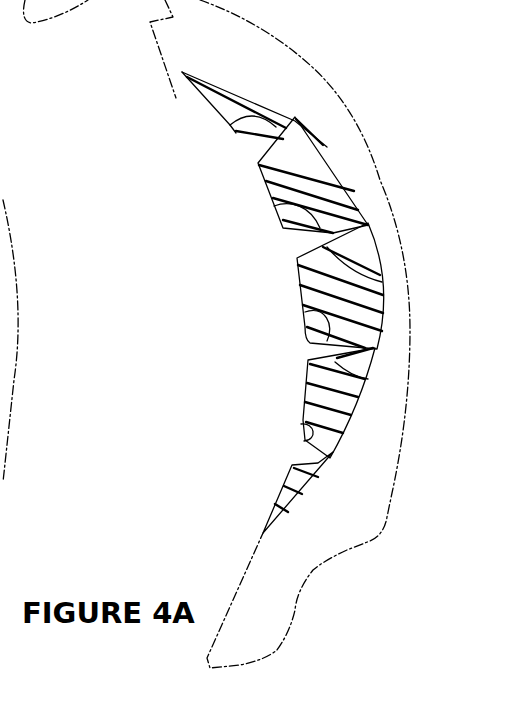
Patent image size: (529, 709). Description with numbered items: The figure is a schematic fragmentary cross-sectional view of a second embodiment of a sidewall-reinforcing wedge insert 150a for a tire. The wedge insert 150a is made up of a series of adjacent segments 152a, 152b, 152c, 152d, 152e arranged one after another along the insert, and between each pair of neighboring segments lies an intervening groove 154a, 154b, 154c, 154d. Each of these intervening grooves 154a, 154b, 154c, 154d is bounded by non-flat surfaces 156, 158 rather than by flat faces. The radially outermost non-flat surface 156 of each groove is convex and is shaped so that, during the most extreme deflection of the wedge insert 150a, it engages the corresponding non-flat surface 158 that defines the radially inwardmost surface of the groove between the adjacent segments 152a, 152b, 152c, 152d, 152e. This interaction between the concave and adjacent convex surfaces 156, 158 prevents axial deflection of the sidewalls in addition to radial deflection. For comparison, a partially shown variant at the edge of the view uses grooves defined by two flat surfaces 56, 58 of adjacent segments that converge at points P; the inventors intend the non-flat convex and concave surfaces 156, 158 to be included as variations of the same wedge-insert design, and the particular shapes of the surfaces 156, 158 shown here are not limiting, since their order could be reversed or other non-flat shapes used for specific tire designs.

The wedge insert 150a is at (218, 322).
The segment 152a is at (232, 110).
The segment 152b is at (293, 187).
The segment 152c is at (320, 275).
The segment 152d is at (313, 403).
The segment 152e is at (296, 483).
The intervening groove 154a is at (260, 143).
The intervening groove 154b is at (323, 240).
The intervening groove 154c is at (322, 346).
The intervening groove 154d is at (312, 453).
The radially outermost non-flat surface 156 is at (230, 125).
The radially inwardmost non-flat surface 158 is at (327, 148).
The point P is at (297, 117).
The flat surface 56 is at (0, 190).
The flat surface 58 is at (0, 252).